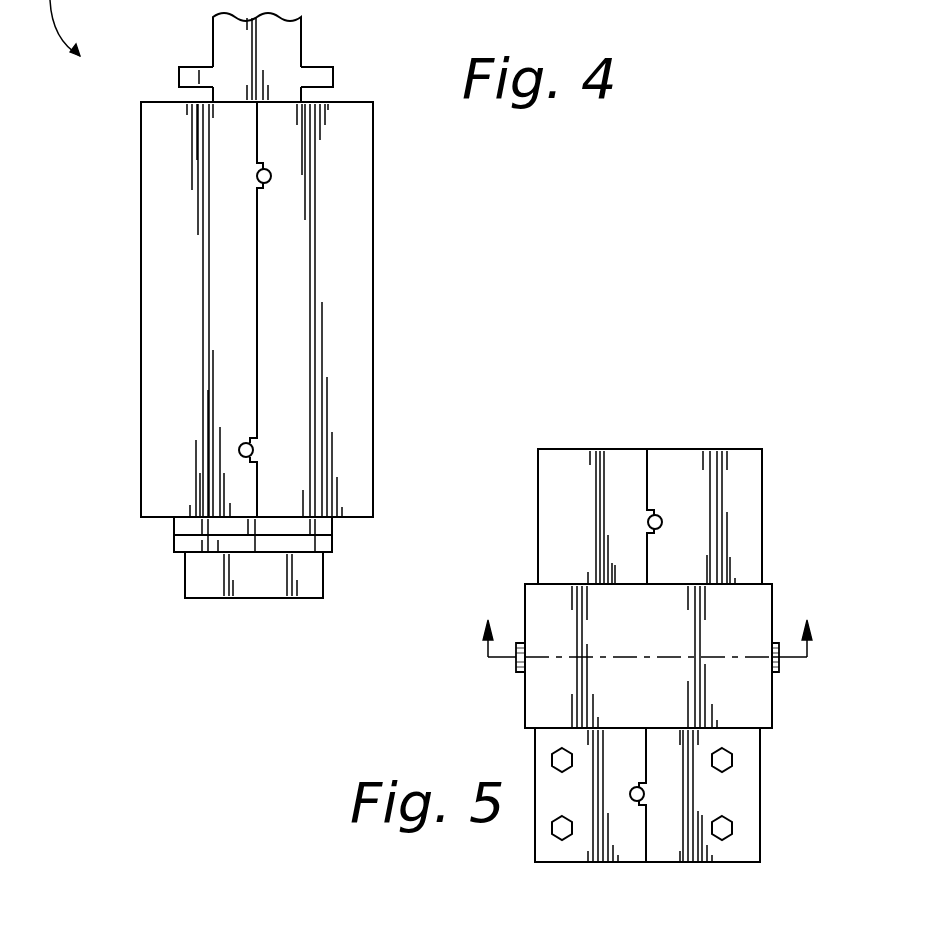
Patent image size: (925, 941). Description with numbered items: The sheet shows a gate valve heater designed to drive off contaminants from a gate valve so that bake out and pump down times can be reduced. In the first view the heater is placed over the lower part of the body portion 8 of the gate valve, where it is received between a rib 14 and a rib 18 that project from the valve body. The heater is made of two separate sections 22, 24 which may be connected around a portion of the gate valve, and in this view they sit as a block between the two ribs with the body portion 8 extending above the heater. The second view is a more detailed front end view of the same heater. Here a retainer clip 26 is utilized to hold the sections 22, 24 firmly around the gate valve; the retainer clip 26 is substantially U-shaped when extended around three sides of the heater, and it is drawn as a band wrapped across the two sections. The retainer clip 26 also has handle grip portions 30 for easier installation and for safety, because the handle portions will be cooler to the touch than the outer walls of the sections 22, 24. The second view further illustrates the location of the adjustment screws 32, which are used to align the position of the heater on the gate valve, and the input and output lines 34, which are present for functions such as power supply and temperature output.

In FIG. 4, the body portion 8 is at (292, 38).
In FIG. 5, the body portion 8 is at (647, 623).
In FIG. 4, the rib 14 is at (328, 77).
In FIG. 4, the rib 18 is at (185, 525).
In FIG. 4, the section 22 is at (346, 232).
In FIG. 5, the section 22 is at (735, 495).
In FIG. 4, the section 24 is at (167, 228).
In FIG. 5, the section 24 is at (542, 508).
In FIG. 5, the retainer clip 26 is at (745, 595).
In FIG. 5, the handle grip portion 30 is at (779, 662).
In FIG. 5, the adjustment screw 32 is at (663, 518).
In FIG. 5, the input and output line 34 is at (733, 760).